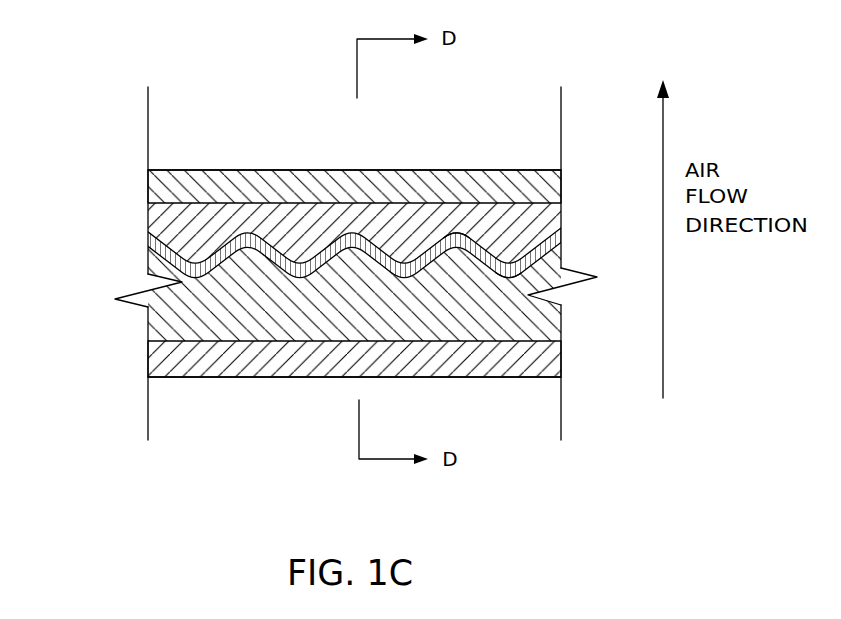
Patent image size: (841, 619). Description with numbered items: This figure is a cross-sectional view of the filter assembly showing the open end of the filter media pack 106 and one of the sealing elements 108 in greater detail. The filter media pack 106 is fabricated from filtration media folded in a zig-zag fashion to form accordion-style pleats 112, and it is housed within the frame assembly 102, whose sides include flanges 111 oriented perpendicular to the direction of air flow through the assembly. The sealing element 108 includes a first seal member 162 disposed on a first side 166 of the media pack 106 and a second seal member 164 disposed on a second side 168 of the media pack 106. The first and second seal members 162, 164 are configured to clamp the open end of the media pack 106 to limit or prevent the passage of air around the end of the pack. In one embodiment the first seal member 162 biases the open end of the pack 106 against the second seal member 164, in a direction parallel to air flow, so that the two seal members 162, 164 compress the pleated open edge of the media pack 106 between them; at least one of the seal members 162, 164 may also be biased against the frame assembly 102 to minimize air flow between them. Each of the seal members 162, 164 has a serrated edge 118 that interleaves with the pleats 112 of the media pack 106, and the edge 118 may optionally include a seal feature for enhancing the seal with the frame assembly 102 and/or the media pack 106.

The frame assembly 102 is at (219, 166).
The flanges 111 is at (378, 170).
The sealing element 108 is at (145, 210).
The second seal member 164 is at (147, 339).
The pleats 112 is at (197, 284).
The serrated edge 118 is at (380, 238).
The filter media pack 106 is at (487, 252).
The second side 168 is at (472, 225).
The first side 166 is at (495, 283).
The first seal member 162 is at (147, 275).